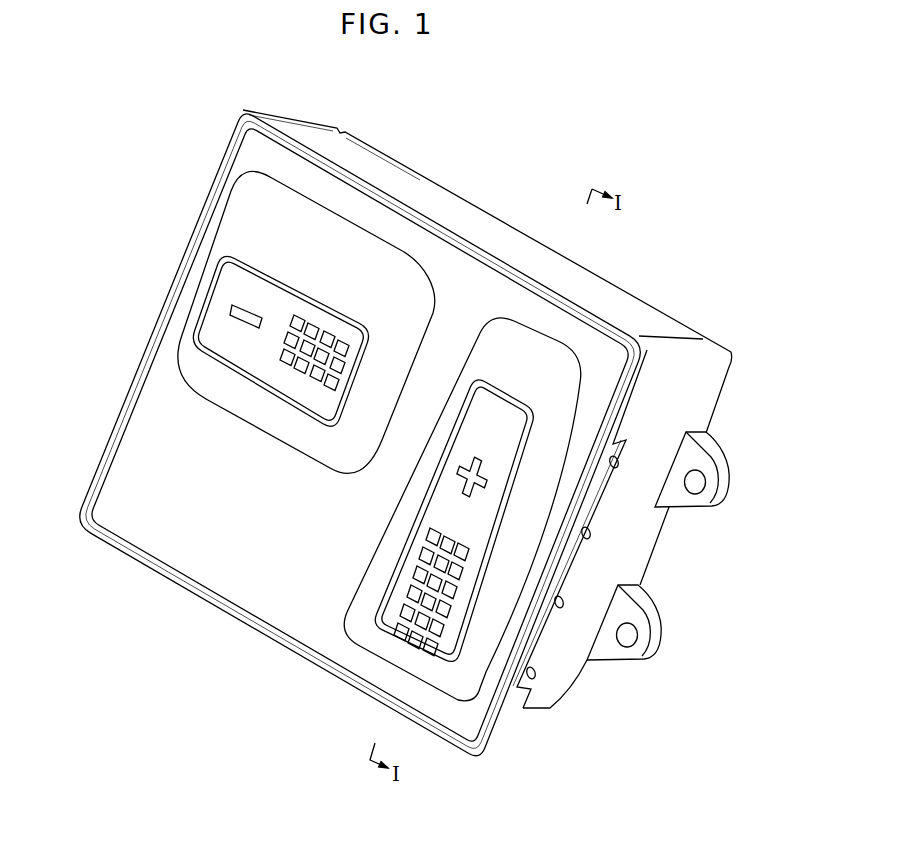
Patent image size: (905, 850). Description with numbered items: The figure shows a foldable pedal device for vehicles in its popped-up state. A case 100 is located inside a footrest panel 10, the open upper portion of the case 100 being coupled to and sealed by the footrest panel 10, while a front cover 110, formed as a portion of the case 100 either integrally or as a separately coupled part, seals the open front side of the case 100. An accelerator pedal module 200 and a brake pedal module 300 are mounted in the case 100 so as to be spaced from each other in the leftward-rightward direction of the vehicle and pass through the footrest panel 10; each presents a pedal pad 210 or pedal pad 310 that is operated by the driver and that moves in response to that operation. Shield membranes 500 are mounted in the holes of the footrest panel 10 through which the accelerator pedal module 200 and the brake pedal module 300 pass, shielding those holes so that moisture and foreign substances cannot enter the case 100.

The footrest panel 10 is at (160, 533).
The case 100 is at (633, 533).
The front cover 110 is at (405, 183).
The accelerator pedal module 200 is at (523, 488).
The pedal pad 210 is at (467, 537).
The brake pedal module 300 is at (216, 368).
The pedal pad 310 is at (218, 323).
The shield membranes 500 is at (267, 223).